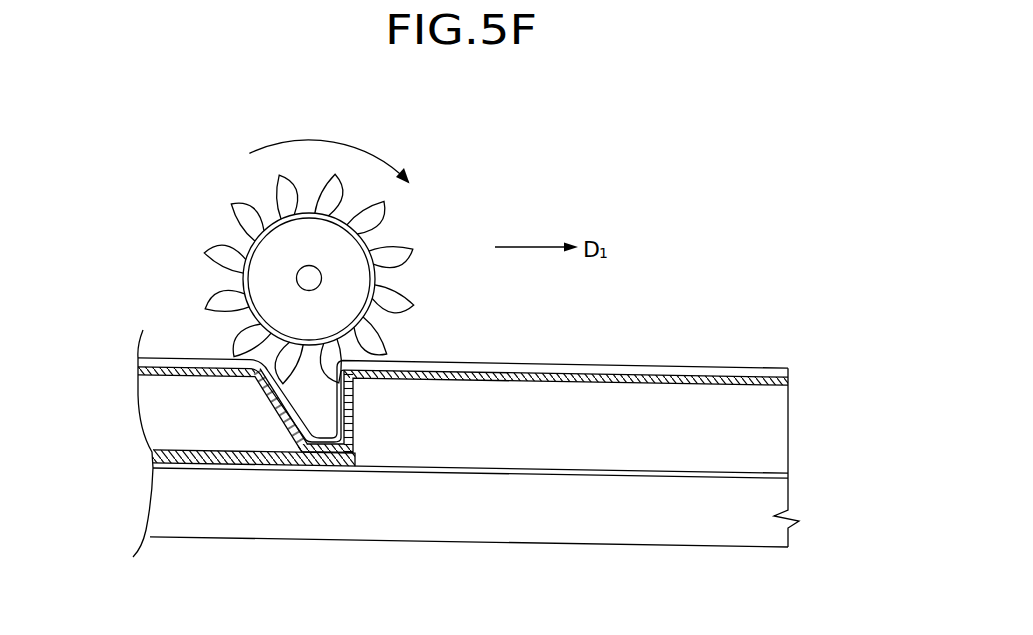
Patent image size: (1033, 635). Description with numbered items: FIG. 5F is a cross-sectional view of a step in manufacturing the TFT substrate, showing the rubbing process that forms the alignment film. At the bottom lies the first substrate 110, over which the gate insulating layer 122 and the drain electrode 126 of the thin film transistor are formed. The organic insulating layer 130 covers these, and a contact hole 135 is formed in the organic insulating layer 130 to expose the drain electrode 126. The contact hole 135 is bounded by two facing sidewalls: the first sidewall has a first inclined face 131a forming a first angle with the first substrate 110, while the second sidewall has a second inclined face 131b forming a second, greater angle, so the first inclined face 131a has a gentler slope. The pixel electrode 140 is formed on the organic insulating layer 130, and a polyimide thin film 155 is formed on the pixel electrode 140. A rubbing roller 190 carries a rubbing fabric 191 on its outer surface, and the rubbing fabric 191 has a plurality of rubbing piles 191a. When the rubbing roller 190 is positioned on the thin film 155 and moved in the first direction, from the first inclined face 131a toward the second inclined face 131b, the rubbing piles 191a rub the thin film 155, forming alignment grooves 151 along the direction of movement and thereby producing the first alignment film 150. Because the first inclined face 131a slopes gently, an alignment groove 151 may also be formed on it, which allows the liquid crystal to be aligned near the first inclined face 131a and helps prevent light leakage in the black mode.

The first substrate 110 is at (693, 532).
The gate insulating layer 122 is at (240, 466).
The drain electrode 126 is at (322, 461).
The organic insulating layer 130 is at (537, 457).
The first inclined face 131a is at (272, 407).
The second inclined face 131b is at (353, 434).
The contact hole 135 is at (326, 411).
The pixel electrode 140 is at (620, 384).
The first alignment film 150 is at (138, 359).
The alignment grooves 151 is at (178, 359).
The polyimide thin film 155 is at (692, 368).
The rubbing roller 190 is at (262, 250).
The rubbing fabric 191 is at (375, 243).
The rubbing piles 191a is at (273, 196).